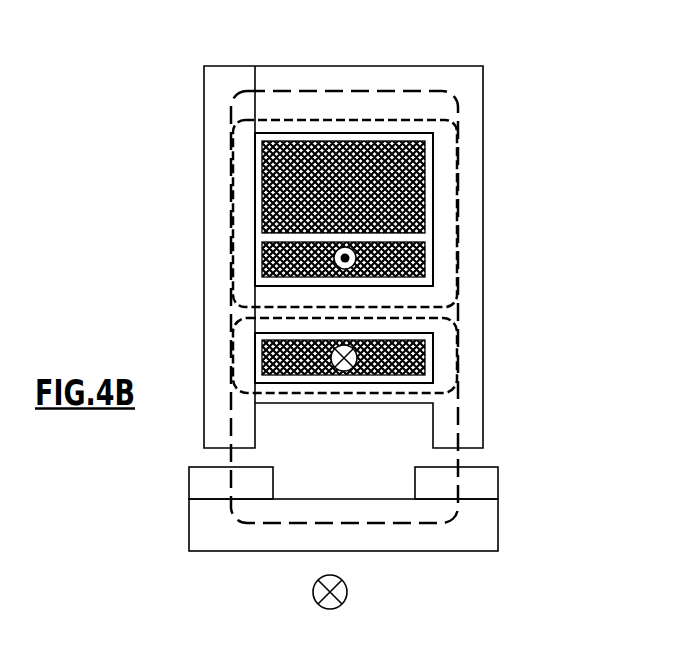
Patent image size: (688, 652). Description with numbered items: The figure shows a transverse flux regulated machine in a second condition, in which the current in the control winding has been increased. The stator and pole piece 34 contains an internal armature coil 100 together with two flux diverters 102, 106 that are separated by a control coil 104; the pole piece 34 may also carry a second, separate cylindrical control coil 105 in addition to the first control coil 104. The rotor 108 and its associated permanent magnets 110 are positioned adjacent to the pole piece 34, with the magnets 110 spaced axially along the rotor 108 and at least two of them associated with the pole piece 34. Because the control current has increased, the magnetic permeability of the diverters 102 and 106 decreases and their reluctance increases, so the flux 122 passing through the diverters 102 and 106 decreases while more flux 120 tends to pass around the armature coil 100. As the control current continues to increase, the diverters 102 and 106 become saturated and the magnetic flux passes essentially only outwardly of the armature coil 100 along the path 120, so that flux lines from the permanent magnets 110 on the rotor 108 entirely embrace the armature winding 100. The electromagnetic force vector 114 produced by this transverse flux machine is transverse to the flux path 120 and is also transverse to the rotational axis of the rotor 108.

The stator and pole piece 34 is at (414, 77).
The armature coil 100 is at (422, 187).
The flux diverter 102 is at (427, 293).
The control coil 104 is at (424, 363).
The control coil 105 is at (422, 260).
The flux diverter 106 is at (373, 400).
The rotor 108 is at (483, 527).
The permanent magnets 110 is at (488, 488).
The electromagnetic force vector 114 is at (348, 592).
The flux path 120 is at (291, 90).
The flux 122 is at (275, 301).